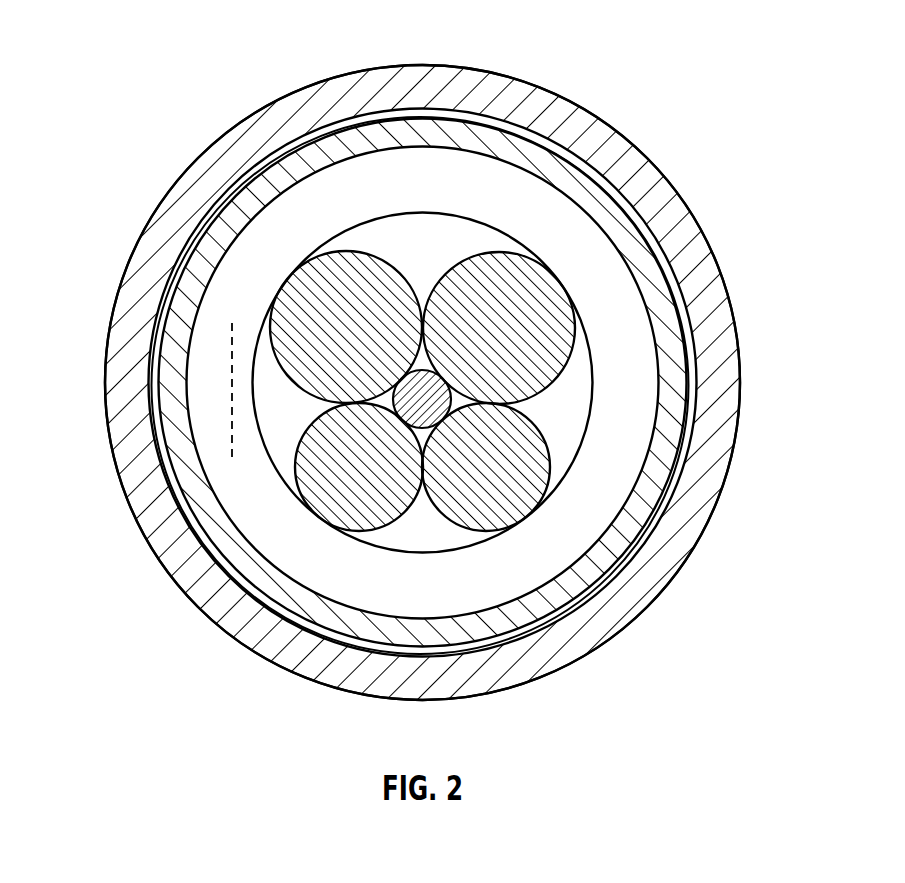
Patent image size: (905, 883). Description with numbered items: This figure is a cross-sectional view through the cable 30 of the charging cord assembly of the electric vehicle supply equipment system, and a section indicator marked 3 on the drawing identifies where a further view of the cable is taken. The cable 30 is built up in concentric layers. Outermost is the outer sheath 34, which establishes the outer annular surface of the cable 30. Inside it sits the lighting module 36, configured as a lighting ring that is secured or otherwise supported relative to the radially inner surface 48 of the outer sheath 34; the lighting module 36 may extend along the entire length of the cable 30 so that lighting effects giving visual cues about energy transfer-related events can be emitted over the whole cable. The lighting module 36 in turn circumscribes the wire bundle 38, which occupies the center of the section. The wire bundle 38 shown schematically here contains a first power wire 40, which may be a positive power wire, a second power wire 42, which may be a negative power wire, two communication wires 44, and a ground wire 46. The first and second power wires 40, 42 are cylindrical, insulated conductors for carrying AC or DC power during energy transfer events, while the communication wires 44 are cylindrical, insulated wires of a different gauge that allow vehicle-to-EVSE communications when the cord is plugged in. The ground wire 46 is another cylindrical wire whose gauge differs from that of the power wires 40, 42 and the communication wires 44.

The cable 30 is at (709, 83).
The outer sheath 34 is at (707, 274).
The lighting module 36 is at (486, 140).
The wire bundle 38 is at (593, 393).
The first power wire 40 is at (335, 278).
The second power wire 42 is at (543, 310).
The communication wires 44 is at (338, 485).
The ground wire 46 is at (425, 392).
The radially inner surface 48 is at (549, 147).
The section line for FIG. 3 is at (232, 323).